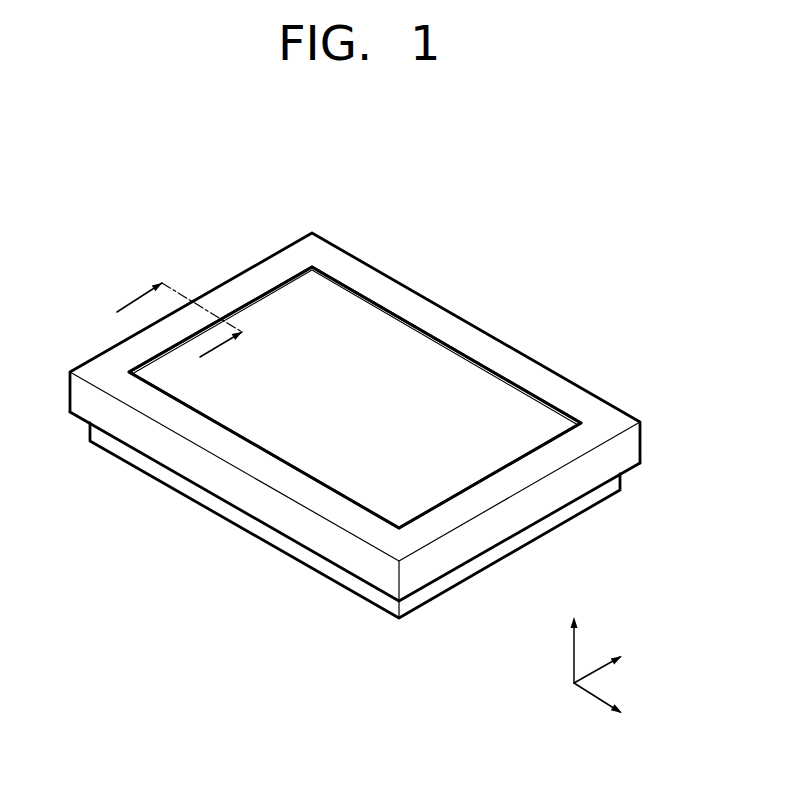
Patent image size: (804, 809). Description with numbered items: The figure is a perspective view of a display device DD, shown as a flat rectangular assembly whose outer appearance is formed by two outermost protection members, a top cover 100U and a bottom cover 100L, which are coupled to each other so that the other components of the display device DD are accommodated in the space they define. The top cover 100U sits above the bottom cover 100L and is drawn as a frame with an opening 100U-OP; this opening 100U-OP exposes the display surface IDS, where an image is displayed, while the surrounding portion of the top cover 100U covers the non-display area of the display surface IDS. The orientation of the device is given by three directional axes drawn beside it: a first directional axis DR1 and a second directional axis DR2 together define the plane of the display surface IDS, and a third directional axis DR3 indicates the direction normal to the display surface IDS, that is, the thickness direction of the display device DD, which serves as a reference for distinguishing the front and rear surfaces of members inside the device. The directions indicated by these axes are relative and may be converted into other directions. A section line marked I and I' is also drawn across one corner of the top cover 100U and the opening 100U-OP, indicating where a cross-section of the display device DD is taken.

The display device DD is at (401, 399).
The top cover 100U is at (400, 425).
The bottom cover 100L is at (620, 478).
The opening of the top cover 100U-OP is at (514, 386).
The display surface IDS is at (383, 358).
The section line I is at (170, 307).
The section line I' is at (211, 355).
The first directional axis DR1 is at (618, 710).
The second directional axis DR2 is at (618, 656).
The third directional axis DR3 is at (573, 635).